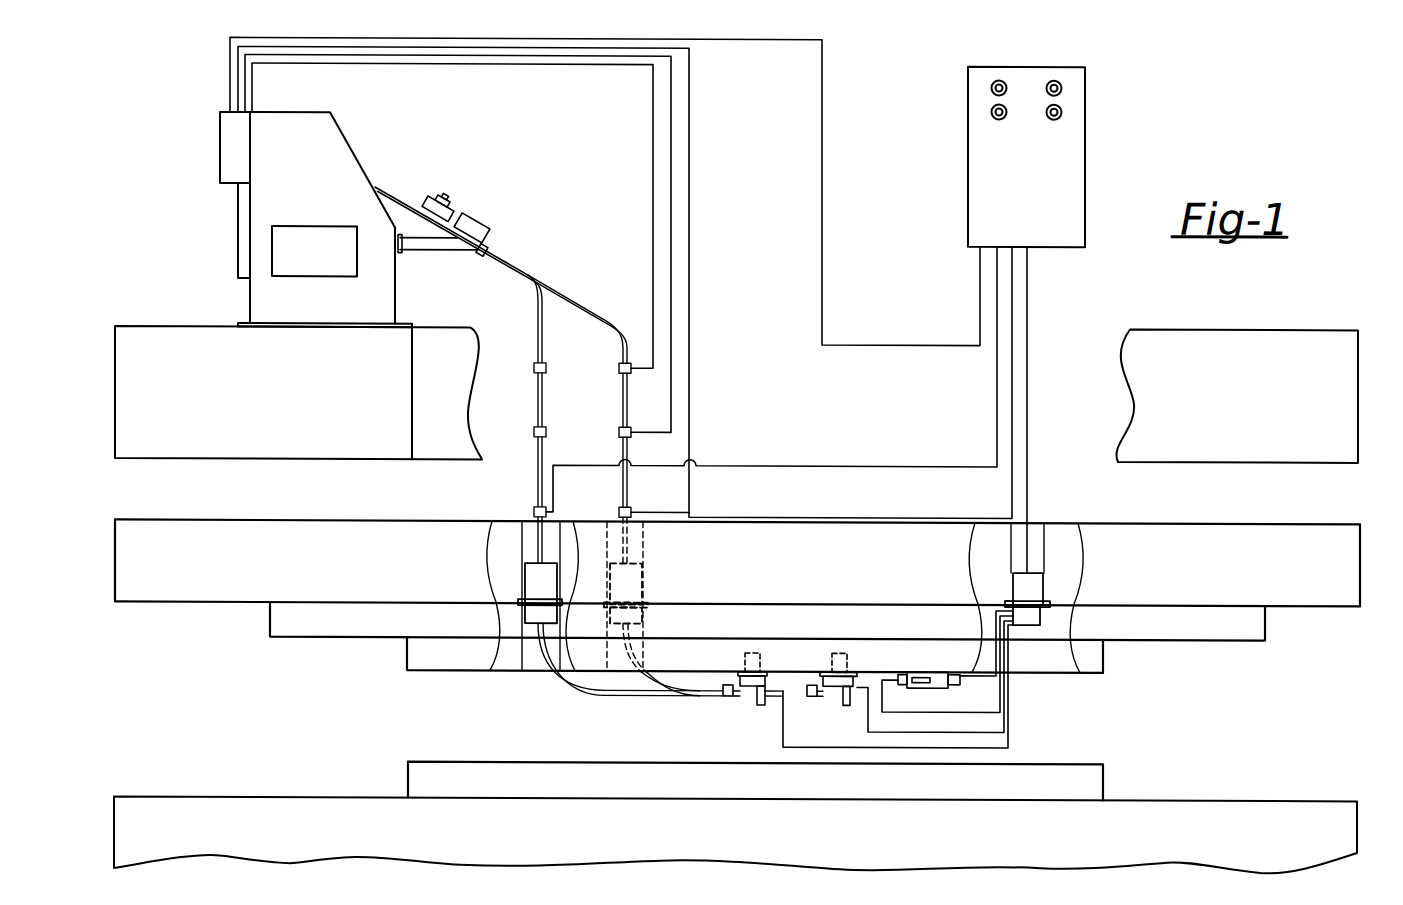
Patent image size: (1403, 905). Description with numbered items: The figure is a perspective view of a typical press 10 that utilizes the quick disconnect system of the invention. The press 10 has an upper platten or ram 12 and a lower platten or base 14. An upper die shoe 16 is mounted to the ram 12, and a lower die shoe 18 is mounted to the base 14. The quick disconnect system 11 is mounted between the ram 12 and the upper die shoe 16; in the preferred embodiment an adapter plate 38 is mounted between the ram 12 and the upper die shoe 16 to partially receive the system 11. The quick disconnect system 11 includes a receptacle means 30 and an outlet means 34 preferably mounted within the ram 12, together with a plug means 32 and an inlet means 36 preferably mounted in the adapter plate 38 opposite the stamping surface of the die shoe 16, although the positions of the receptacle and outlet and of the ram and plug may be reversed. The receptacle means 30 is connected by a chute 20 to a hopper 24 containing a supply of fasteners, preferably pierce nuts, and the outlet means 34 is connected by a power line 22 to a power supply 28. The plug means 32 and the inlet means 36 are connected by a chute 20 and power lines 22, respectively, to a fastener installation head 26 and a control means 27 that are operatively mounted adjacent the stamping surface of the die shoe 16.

The press 10 is at (1230, 295).
The quick disconnect system 11 is at (645, 561).
The ram 12 is at (1374, 550).
The base 14 is at (1355, 812).
The upper die shoe 16 is at (1105, 655).
The lower die shoe 18 is at (1105, 776).
The chute 20 is at (538, 453).
The power line 22 is at (1027, 418).
The hopper 24 is at (360, 153).
The fastener installation head 26 is at (742, 697).
The control means 27 is at (930, 682).
The power supply 28 is at (1085, 143).
The receptacle means 30 is at (523, 569).
The plug means 32 is at (523, 614).
The outlet means 34 is at (1045, 581).
The inlet means 36 is at (1044, 616).
The adapter plate 38 is at (1265, 621).